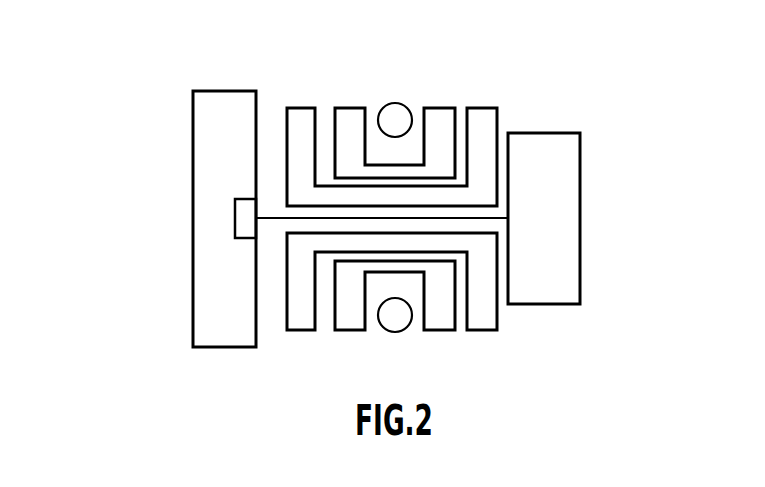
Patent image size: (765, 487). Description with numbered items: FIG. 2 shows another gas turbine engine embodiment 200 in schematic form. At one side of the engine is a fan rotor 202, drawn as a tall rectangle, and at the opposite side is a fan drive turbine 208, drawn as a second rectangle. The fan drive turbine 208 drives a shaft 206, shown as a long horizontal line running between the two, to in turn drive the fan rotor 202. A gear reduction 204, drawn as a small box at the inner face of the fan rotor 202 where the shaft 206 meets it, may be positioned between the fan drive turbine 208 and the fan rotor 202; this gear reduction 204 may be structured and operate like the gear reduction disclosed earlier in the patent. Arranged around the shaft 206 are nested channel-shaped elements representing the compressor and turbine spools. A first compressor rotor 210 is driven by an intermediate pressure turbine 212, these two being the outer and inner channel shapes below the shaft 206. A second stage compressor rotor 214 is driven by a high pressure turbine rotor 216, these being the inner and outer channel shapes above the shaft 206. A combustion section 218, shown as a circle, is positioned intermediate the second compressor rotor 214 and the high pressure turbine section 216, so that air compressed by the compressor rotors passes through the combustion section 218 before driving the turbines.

The embodiment 200 is at (156, 64).
The fan rotor 202 is at (210, 152).
The gear reduction 204 is at (243, 223).
The shaft 206 is at (486, 214).
The fan drive turbine 208 is at (567, 198).
The first compressor rotor 210 is at (304, 307).
The intermediate pressure turbine 212 is at (487, 225).
The second stage compressor rotor 214 is at (348, 118).
The high pressure turbine rotor 216 is at (442, 118).
The combustion section 218 is at (397, 110).